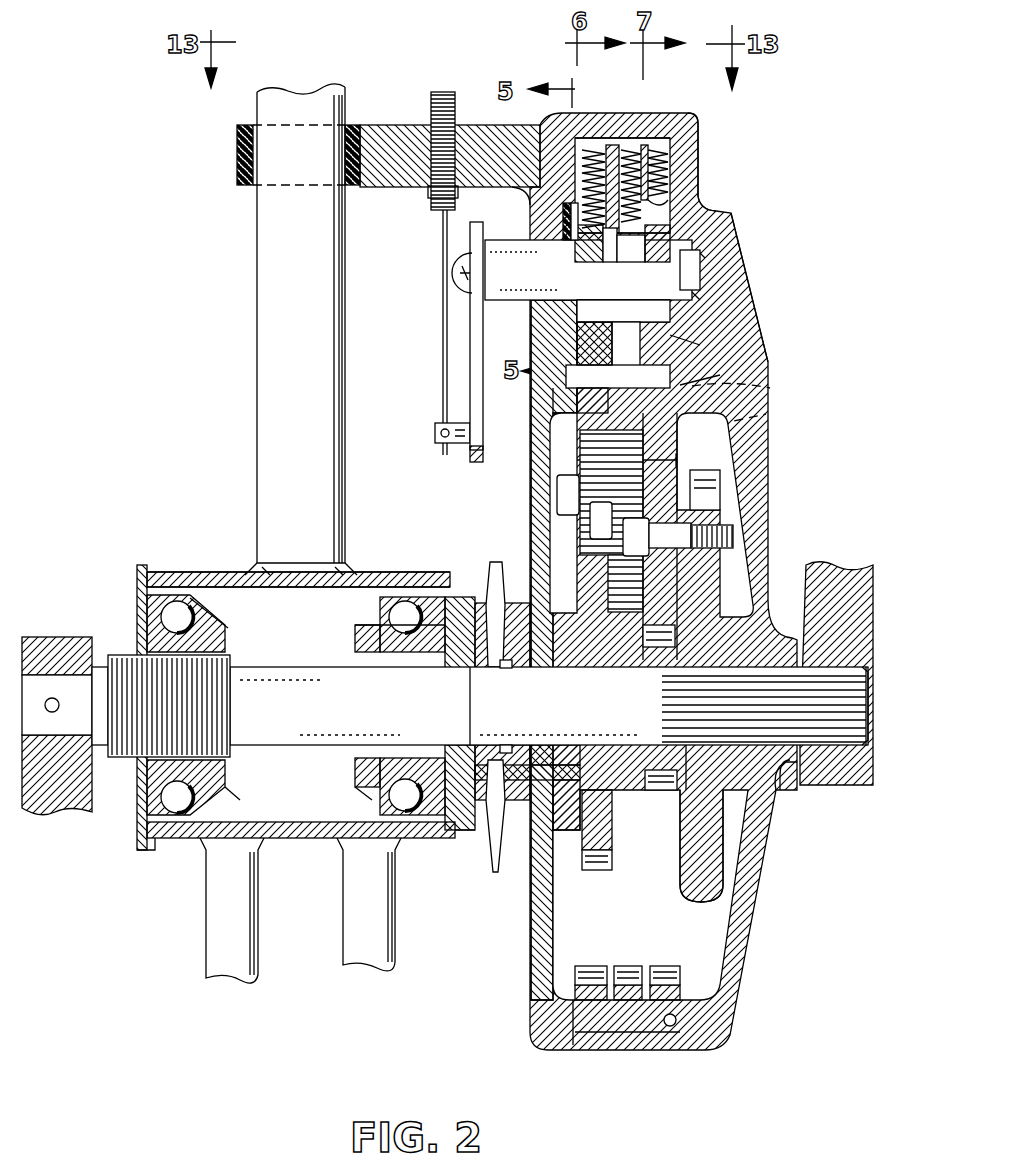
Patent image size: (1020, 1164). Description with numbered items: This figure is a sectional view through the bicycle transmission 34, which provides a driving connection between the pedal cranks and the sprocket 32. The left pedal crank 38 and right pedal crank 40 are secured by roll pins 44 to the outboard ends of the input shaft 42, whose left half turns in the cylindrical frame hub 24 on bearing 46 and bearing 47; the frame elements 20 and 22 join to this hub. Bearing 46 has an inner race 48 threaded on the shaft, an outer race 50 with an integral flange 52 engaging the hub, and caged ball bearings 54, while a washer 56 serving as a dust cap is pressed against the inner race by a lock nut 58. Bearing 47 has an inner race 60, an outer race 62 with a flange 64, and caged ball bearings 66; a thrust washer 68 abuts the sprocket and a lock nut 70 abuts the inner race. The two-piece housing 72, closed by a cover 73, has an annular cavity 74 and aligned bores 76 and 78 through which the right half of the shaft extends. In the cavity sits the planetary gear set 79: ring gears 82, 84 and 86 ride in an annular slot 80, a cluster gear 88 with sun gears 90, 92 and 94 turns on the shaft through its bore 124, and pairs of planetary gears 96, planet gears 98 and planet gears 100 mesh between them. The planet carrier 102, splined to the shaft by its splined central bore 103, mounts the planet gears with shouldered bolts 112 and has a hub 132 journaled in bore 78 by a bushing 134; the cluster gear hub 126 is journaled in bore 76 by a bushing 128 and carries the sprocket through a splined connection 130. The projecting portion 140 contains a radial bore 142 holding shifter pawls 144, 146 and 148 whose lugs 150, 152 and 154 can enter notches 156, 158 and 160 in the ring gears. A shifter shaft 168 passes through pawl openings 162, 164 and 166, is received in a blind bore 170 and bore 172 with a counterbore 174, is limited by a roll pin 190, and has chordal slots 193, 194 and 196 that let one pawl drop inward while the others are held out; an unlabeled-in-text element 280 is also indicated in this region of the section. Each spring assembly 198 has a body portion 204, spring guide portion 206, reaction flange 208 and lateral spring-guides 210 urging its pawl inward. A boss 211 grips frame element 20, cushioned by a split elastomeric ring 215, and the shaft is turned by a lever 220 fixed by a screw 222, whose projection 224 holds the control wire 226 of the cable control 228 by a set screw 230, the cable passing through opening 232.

The forwardly extending lower frame element 20 is at (306, 334).
The rearwardly extending lower frame elements 22 is at (218, 946).
The frame hub 24 is at (190, 560).
The sprocket 32 is at (500, 835).
The transmission 34 is at (752, 1046).
The left pedal crank 38 is at (50, 808).
The right pedal crank 40 is at (840, 566).
The input shaft 42 is at (315, 713).
The roll pins 44 is at (54, 700).
The bearing 46 is at (240, 790).
The bearing 47 is at (352, 796).
The inner race 48 is at (162, 790).
The outer race 50 is at (228, 614).
The flange 52 is at (143, 572).
The caged ball bearings 54 is at (165, 614).
The washer 56 is at (145, 840).
The lock nut 58 is at (145, 766).
The inner race 60 is at (450, 582).
The outer race 62 is at (366, 616).
The flange 64 is at (460, 597).
The caged ball bearings 66 is at (378, 782).
The thrust washer 68 is at (468, 838).
The lock nut 70 is at (372, 645).
The housing 72 is at (752, 320).
The cover 73 is at (530, 392).
The annular cavity 74 is at (634, 944).
The bore 76 is at (575, 762).
The bore 78 is at (808, 764).
The planetary gear set 79 is at (720, 488).
The annular slot 80 is at (676, 1030).
The ring gear 82 is at (585, 1030).
The ring gear 84 is at (622, 1030).
The ring gear 86 is at (660, 1030).
The cluster gear 88 is at (636, 858).
The sun gear 90 is at (600, 870).
The sun gear 92 is at (612, 828).
The sun gear 94 is at (652, 790).
The planetary gears 96 is at (600, 548).
The planet gears 98 is at (600, 585).
The planet gears 100 is at (670, 578).
The planet carrier 102 is at (700, 904).
The splined central bore 103 is at (662, 696).
The shouldered bolt 112 is at (733, 536).
The bore 124 is at (548, 668).
The hub 126 is at (508, 668).
The bushing 128 is at (545, 766).
The splined connection 130 is at (510, 745).
The hub 132 is at (782, 772).
The bushing 134 is at (790, 778).
The projecting portion 140 is at (698, 126).
The bore 142 is at (630, 140).
The shifter pawl 144 is at (597, 262).
The shifter pawl 146 is at (626, 248).
The shifter pawl 148 is at (700, 206).
The lug 150 is at (577, 402).
The lug 152 is at (690, 386).
The lug 154 is at (668, 342).
The notches 156 is at (563, 428).
The notches 158 is at (766, 388).
The notches 160 is at (766, 415).
The opening 162 is at (566, 292).
The opening 164 is at (630, 324).
The opening 166 is at (712, 300).
The shifter shaft 168 is at (470, 320).
The blind bore 170 is at (700, 270).
The bore 172 is at (542, 310).
The counterbore 174 is at (562, 210).
The roll pin 190 is at (560, 228).
The slot 193 is at (616, 292).
The slot 194 is at (655, 262).
The slot 196 is at (672, 226).
The spring assembly 198 is at (700, 152).
The body portion 204 is at (705, 262).
The spring guide portion 206 is at (538, 128).
The reaction flange 208 is at (597, 140).
The lateral spring-guides 210 is at (638, 140).
The boss 211 is at (395, 125).
The split elastomeric ring 215 is at (240, 152).
The lever 220 is at (475, 464).
The screw 222 is at (457, 268).
The projection 224 is at (436, 430).
The control wire 226 is at (443, 356).
The cable control 228 is at (433, 93).
The set screw 230 is at (443, 452).
The opening 232 is at (432, 120).
The block 280 is at (585, 345).